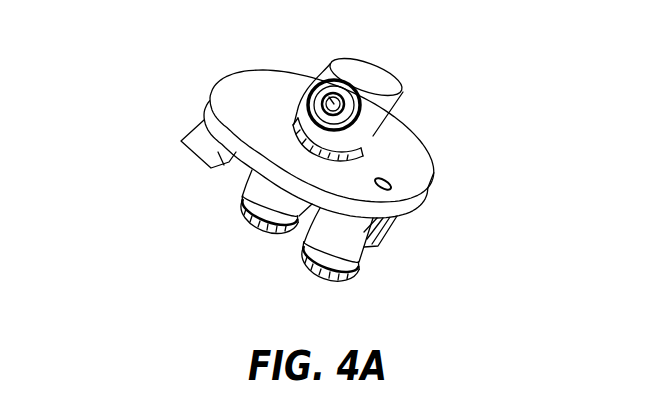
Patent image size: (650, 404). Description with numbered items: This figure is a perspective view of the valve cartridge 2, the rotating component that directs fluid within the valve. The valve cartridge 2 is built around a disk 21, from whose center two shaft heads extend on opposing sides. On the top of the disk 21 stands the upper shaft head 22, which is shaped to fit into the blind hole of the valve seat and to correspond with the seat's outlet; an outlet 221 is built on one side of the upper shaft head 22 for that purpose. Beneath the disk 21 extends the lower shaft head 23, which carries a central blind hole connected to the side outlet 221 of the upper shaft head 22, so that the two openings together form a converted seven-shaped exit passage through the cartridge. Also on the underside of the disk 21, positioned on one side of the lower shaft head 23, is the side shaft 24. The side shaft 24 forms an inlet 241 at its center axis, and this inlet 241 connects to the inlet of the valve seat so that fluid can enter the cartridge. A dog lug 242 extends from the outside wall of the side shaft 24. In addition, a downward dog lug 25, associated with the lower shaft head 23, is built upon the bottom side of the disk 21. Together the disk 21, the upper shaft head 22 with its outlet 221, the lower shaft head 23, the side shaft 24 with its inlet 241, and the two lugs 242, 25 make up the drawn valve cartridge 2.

The valve cartridge 2 is at (316, 165).
The disk 21 is at (252, 88).
The upper shaft head 22 is at (375, 82).
The outlet 221 is at (320, 80).
The lower shaft head 23 is at (268, 193).
The side shaft 24 is at (411, 267).
The inlet 241 is at (392, 183).
The dog lug 242 is at (397, 236).
The downward dog lug 25 is at (187, 140).